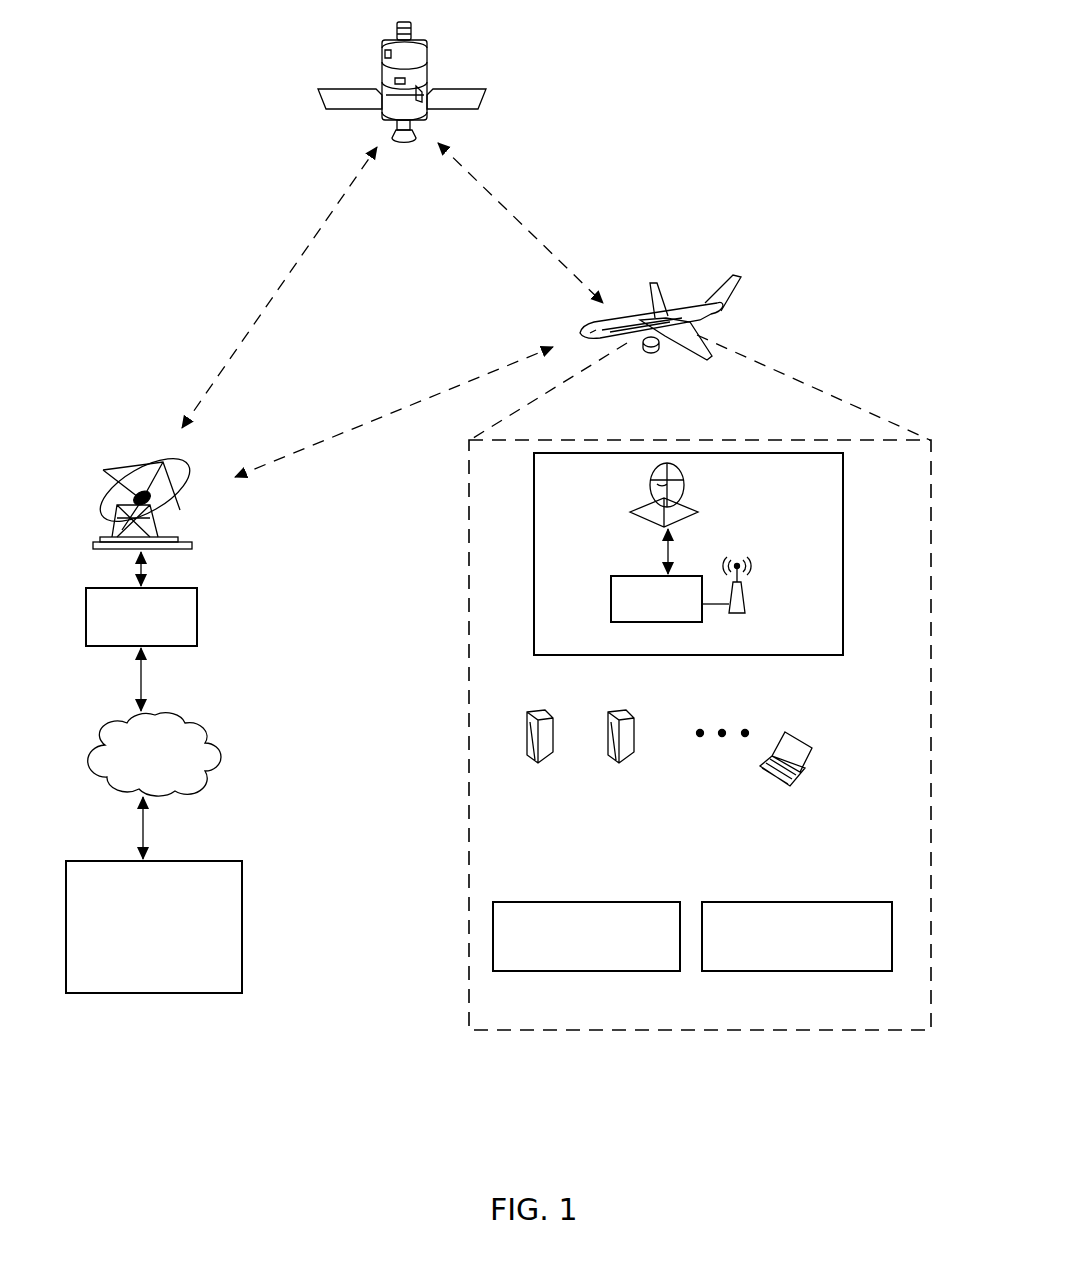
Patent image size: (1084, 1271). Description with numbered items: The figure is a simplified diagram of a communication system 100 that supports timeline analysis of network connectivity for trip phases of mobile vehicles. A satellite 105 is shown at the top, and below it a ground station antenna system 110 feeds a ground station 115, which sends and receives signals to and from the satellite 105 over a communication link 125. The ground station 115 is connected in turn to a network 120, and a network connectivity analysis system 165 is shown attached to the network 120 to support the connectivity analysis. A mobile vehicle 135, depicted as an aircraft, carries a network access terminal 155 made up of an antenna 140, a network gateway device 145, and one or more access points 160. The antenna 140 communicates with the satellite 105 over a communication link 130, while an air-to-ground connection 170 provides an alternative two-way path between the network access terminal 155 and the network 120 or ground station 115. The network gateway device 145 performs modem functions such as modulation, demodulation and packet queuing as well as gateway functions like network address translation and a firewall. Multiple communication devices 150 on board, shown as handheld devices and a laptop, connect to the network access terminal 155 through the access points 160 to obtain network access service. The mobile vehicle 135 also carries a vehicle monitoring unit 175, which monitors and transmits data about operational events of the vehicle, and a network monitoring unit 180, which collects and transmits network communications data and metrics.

The communication system 100 is at (688, 102).
The satellite 105 is at (430, 47).
The ground station antenna system 110 is at (186, 518).
The ground station 115 is at (198, 625).
The network 120 is at (193, 783).
The communication link 125 is at (259, 322).
The communication link 130 is at (535, 232).
The mobile vehicle 135 is at (591, 331).
The antenna 140 is at (686, 480).
The network gateway device 145 is at (690, 576).
The communication devices 150 is at (550, 758).
The network access terminal 155 is at (846, 550).
The access points 160 is at (746, 598).
The network connectivity analysis system 165 is at (243, 915).
The air-to-ground connection 170 is at (362, 424).
The vehicle monitoring unit 175 is at (559, 902).
The network monitoring unit 180 is at (759, 902).